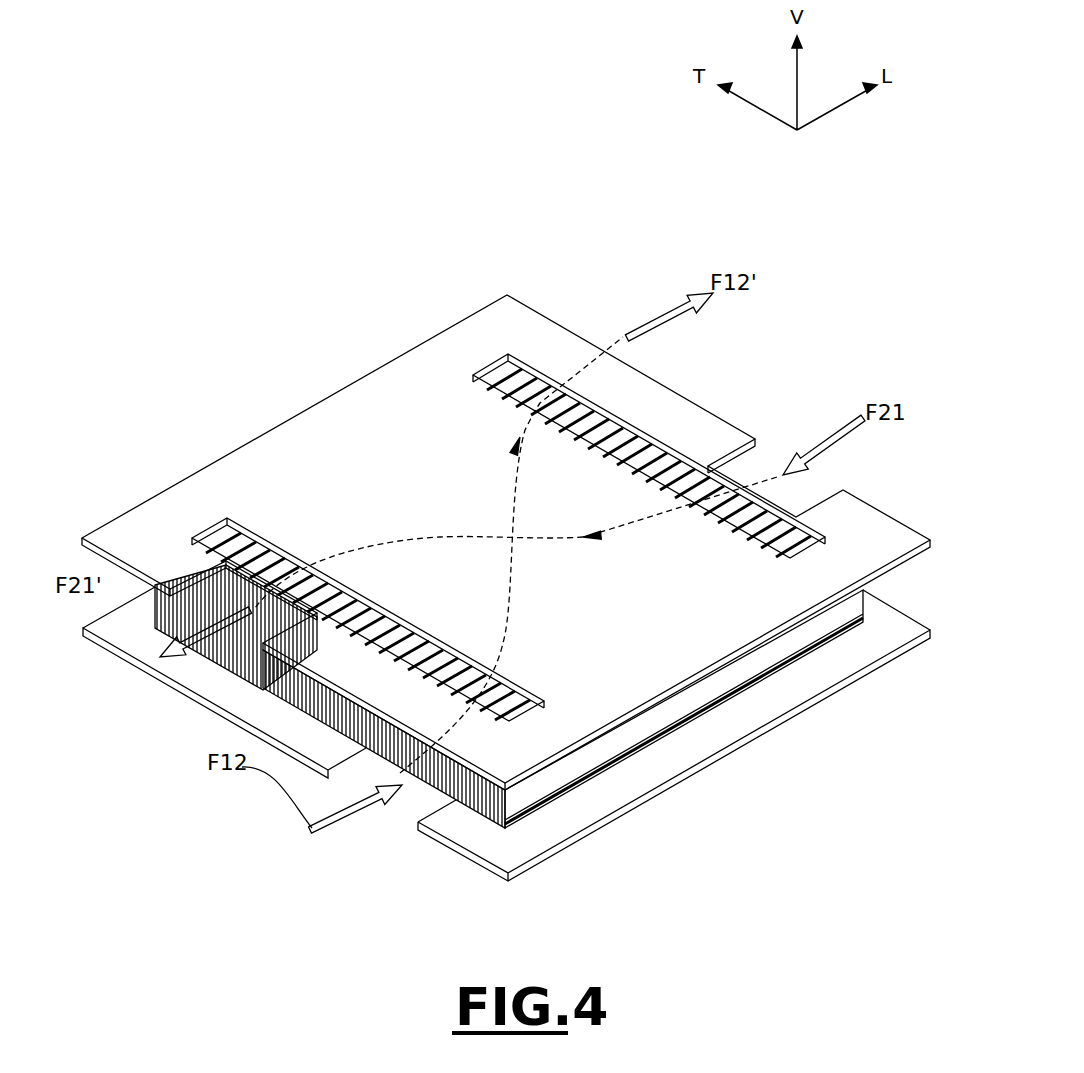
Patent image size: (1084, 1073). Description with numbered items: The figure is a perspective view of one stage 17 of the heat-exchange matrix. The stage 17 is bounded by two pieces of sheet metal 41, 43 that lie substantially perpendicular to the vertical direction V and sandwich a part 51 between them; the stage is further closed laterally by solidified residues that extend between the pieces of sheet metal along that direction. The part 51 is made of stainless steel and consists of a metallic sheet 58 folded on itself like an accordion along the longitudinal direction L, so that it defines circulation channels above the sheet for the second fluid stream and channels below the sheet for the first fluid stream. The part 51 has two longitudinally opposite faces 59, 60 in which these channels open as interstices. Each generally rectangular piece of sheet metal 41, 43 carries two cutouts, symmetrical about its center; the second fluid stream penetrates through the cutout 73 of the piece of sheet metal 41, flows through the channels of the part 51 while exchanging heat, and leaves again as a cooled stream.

The stage 17 is at (306, 270).
The piece of sheet metal 41 is at (858, 512).
The piece of sheet metal 43 is at (845, 655).
The part 51 is at (580, 765).
The metallic sheet 58 is at (275, 625).
The longitudinally opposite face 59 is at (197, 666).
The longitudinally opposite face 60 is at (765, 457).
The cutout 73 is at (388, 814).